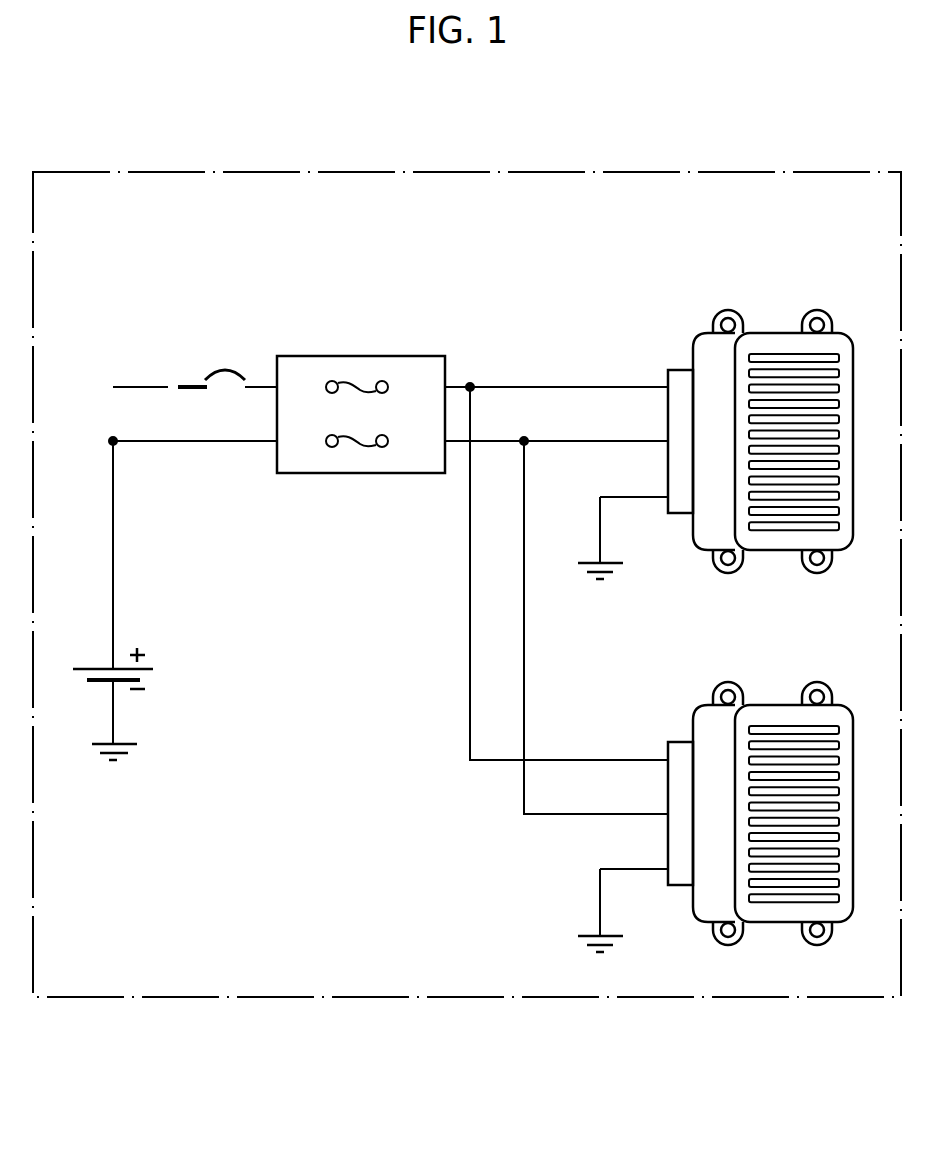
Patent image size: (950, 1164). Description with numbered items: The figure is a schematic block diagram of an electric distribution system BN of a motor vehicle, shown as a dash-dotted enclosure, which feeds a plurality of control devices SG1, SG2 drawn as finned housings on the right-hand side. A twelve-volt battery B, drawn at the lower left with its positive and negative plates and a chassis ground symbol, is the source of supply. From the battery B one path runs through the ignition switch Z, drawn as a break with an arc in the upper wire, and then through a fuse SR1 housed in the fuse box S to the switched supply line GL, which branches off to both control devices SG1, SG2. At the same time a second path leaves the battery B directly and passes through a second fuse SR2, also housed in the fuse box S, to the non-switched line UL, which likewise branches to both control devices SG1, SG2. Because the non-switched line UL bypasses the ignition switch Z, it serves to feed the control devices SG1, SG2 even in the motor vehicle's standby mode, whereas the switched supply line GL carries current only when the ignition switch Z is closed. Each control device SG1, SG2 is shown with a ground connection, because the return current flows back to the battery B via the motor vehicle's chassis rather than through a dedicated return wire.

The electric distribution system BN is at (741, 172).
The battery B is at (95, 667).
The ignition switch Z is at (224, 370).
The fuse box S is at (361, 408).
The fuse SR1 is at (357, 383).
The second fuse SR2 is at (357, 447).
The switched supply line GL is at (565, 385).
The non-switched line UL is at (563, 443).
The control device SG1 is at (772, 333).
The control device SG2 is at (772, 705).